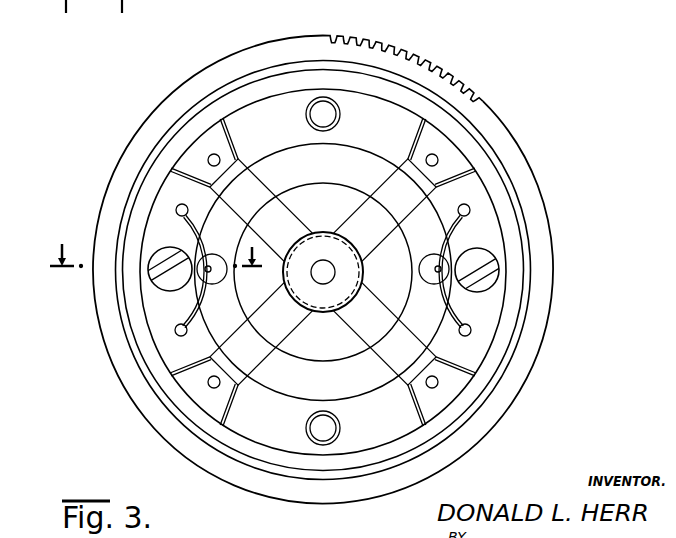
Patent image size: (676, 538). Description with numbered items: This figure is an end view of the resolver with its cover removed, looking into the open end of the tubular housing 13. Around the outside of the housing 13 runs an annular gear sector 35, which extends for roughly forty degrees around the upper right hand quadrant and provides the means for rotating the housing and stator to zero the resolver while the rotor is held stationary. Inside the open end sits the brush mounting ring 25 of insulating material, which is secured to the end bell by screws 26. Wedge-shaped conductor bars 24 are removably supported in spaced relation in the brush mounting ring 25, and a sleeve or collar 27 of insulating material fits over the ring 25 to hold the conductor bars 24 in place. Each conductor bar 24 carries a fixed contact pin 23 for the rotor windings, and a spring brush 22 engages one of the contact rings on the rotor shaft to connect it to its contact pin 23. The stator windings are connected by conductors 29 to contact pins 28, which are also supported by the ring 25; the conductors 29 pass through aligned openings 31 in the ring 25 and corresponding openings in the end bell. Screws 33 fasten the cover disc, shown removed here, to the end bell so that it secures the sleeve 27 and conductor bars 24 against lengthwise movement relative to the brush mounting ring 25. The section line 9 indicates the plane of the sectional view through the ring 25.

The section line 9- 9 is at (151, 247).
The housing 13 is at (510, 192).
The spring brush 22 is at (355, 207).
The contact pins 23 is at (208, 160).
The conductor bars 24 is at (207, 133).
The brush mounting ring 25 is at (253, 112).
The screws 26 is at (153, 276).
The sleeve or collar 27 is at (513, 285).
The contact pins 28 is at (176, 210).
The conductors 29 is at (178, 318).
The openings 31 is at (218, 268).
The screws 33 is at (350, 3).
The annular gear sector 35 is at (288, 42).